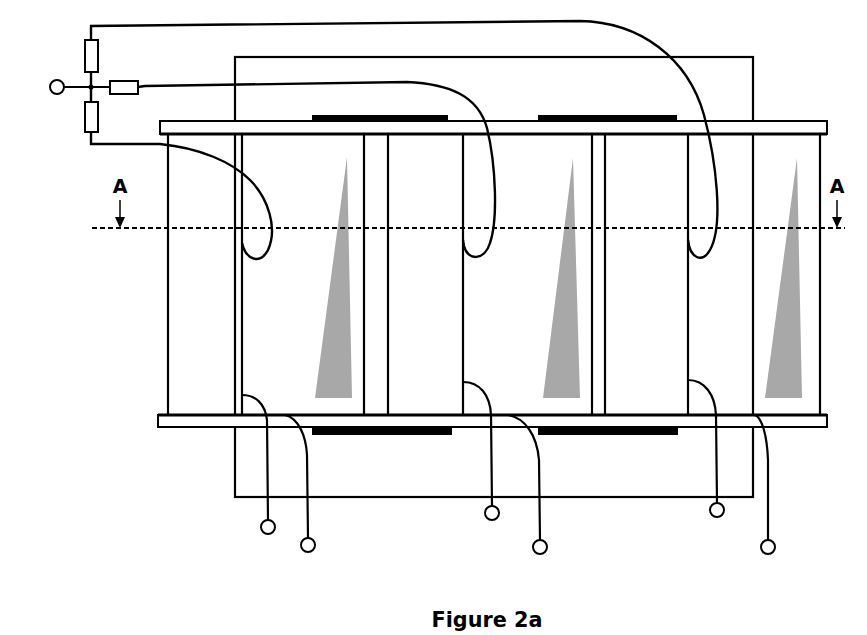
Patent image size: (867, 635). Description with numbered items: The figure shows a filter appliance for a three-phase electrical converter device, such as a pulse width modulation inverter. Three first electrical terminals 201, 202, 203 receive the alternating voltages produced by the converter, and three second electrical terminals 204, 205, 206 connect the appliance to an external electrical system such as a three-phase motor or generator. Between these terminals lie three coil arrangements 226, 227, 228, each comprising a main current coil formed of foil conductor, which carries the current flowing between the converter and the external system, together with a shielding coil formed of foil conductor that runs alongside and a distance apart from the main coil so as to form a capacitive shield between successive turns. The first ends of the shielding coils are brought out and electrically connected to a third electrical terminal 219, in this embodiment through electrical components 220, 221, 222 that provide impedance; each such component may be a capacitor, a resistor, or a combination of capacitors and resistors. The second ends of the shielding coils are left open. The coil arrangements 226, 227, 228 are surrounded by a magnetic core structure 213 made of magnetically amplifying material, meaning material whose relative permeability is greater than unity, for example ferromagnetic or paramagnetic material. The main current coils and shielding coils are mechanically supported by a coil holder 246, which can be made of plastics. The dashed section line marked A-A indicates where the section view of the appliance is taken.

The magnetic core structure 213 is at (530, 93).
The third electrical terminal 219 is at (50, 87).
The electrical component 220 is at (85, 118).
The electrical component 221 is at (114, 80).
The electrical component 222 is at (85, 62).
The coil arrangement 226 is at (317, 193).
The coil arrangement 227 is at (544, 196).
The coil arrangement 228 is at (771, 194).
The first electrical terminal 201 is at (261, 529).
The first electrical terminal 202 is at (485, 519).
The first electrical terminal 203 is at (710, 516).
The second electrical terminal 204 is at (301, 548).
The second electrical terminal 205 is at (532, 551).
The second electrical terminal 206 is at (761, 551).
The coil holder 246 is at (158, 421).